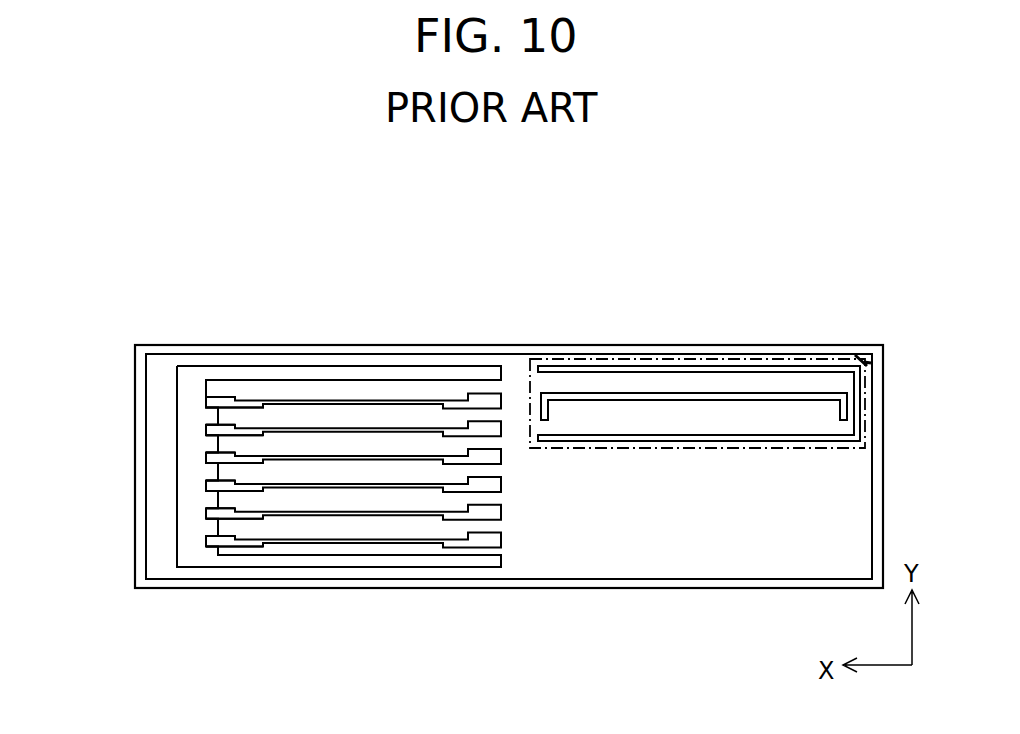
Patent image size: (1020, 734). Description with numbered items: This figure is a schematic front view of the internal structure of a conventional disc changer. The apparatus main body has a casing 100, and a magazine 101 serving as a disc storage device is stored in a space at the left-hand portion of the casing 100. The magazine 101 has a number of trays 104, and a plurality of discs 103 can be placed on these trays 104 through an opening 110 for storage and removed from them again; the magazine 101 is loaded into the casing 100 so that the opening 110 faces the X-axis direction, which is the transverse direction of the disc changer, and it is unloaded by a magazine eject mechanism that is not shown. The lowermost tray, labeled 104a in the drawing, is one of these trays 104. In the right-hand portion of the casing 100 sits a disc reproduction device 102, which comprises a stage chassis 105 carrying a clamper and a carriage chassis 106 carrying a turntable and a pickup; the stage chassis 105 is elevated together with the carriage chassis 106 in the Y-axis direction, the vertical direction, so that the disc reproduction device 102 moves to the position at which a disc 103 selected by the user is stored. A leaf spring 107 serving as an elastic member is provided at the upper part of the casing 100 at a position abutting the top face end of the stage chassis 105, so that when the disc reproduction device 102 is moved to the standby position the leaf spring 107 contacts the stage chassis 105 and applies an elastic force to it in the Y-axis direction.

The casing 100 is at (418, 345).
The magazine 101 is at (240, 366).
The disc reproduction device 102 is at (735, 450).
The discs 103 is at (322, 459).
The trays 104 is at (205, 541).
The first electrode pad 104a is at (205, 401).
The stage chassis 105 is at (730, 358).
The carriage chassis 106 is at (622, 392).
The leaf spring 107 is at (861, 355).
The opening 110 is at (507, 470).